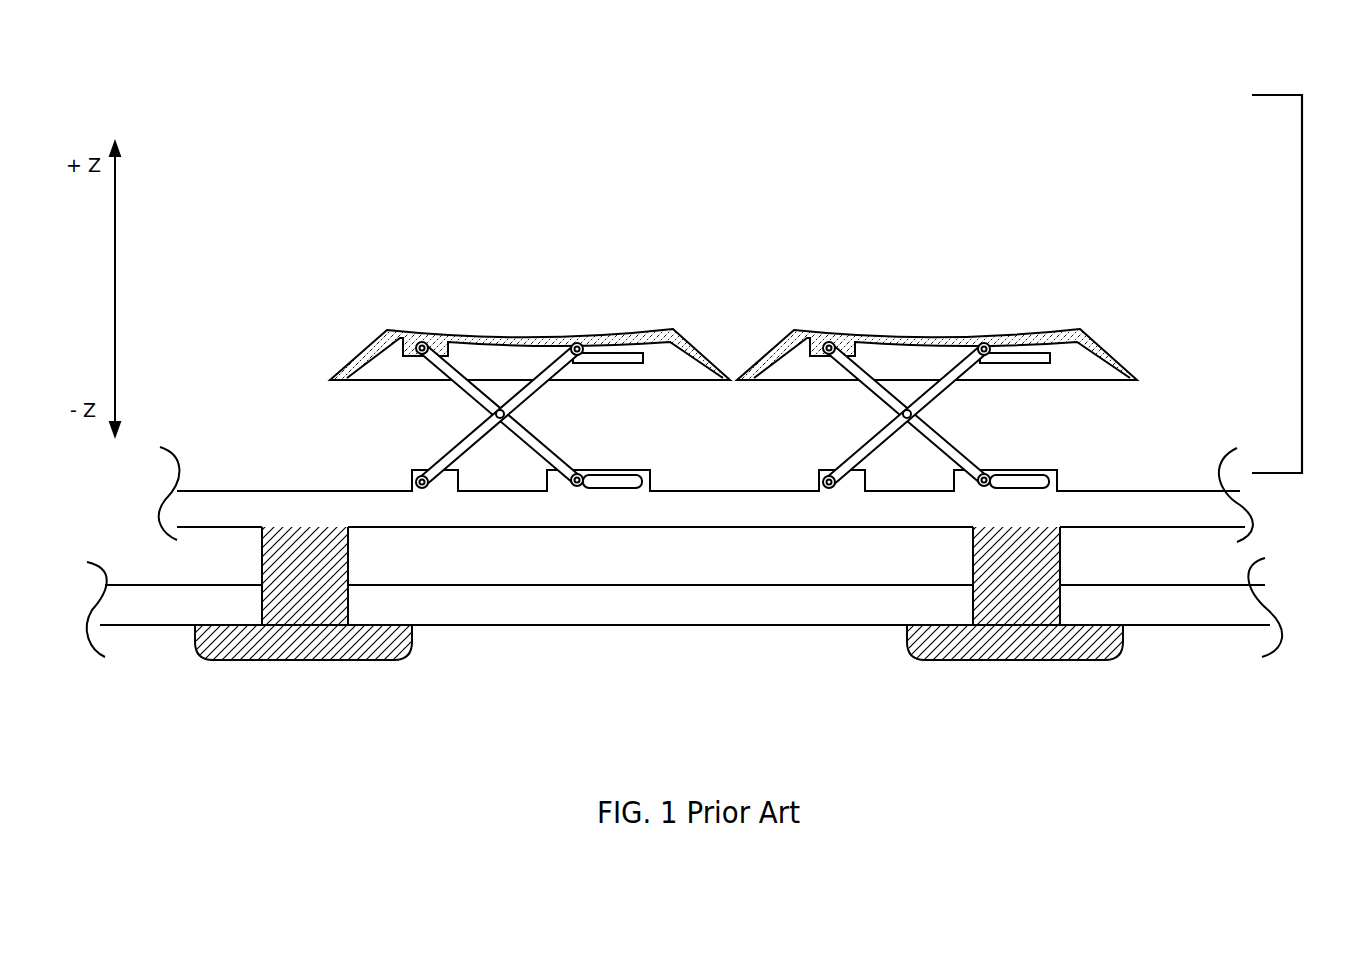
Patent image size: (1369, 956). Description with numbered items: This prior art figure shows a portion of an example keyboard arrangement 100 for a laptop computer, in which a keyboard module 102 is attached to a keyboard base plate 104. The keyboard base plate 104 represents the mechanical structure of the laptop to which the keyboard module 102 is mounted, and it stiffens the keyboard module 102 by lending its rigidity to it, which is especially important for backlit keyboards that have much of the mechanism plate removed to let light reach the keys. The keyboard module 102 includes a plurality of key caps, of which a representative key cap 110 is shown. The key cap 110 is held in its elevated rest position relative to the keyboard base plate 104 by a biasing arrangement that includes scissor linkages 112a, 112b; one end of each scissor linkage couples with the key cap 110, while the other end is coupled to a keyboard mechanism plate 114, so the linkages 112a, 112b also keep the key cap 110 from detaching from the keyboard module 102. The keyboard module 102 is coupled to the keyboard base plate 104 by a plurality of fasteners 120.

The keyboard arrangement 100 is at (334, 153).
The keyboard module 102 is at (1304, 284).
The keyboard base plate 104 is at (1213, 610).
The key cap 110 is at (478, 360).
The scissor linkage 112a is at (463, 398).
The scissor linkage 112b is at (533, 427).
The keyboard mechanism plate 114 is at (288, 502).
The fasteners 120 is at (290, 623).